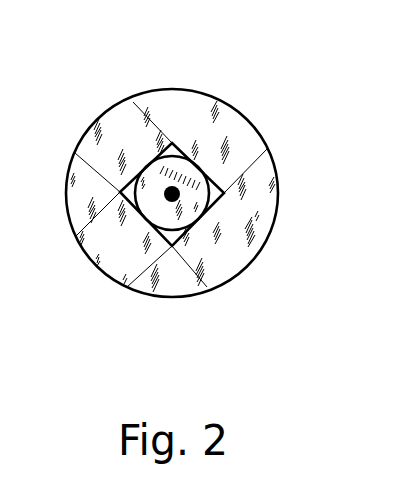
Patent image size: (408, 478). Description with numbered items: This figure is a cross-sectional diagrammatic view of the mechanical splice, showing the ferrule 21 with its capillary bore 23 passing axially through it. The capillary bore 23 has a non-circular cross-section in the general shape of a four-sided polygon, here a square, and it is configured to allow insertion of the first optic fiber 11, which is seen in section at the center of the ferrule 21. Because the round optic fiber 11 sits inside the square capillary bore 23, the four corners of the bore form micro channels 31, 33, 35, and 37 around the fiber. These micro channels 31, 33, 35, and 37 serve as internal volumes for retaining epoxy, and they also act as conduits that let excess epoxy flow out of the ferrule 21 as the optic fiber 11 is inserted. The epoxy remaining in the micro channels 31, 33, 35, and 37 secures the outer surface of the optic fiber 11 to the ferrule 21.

The first optic fiber 11 is at (205, 213).
The ferrule 21 is at (115, 102).
The capillary bore 23 is at (188, 152).
The micro channel 31 is at (172, 144).
The micro channel 33 is at (172, 247).
The micro channel 35 is at (224, 193).
The micro channel 37 is at (120, 192).